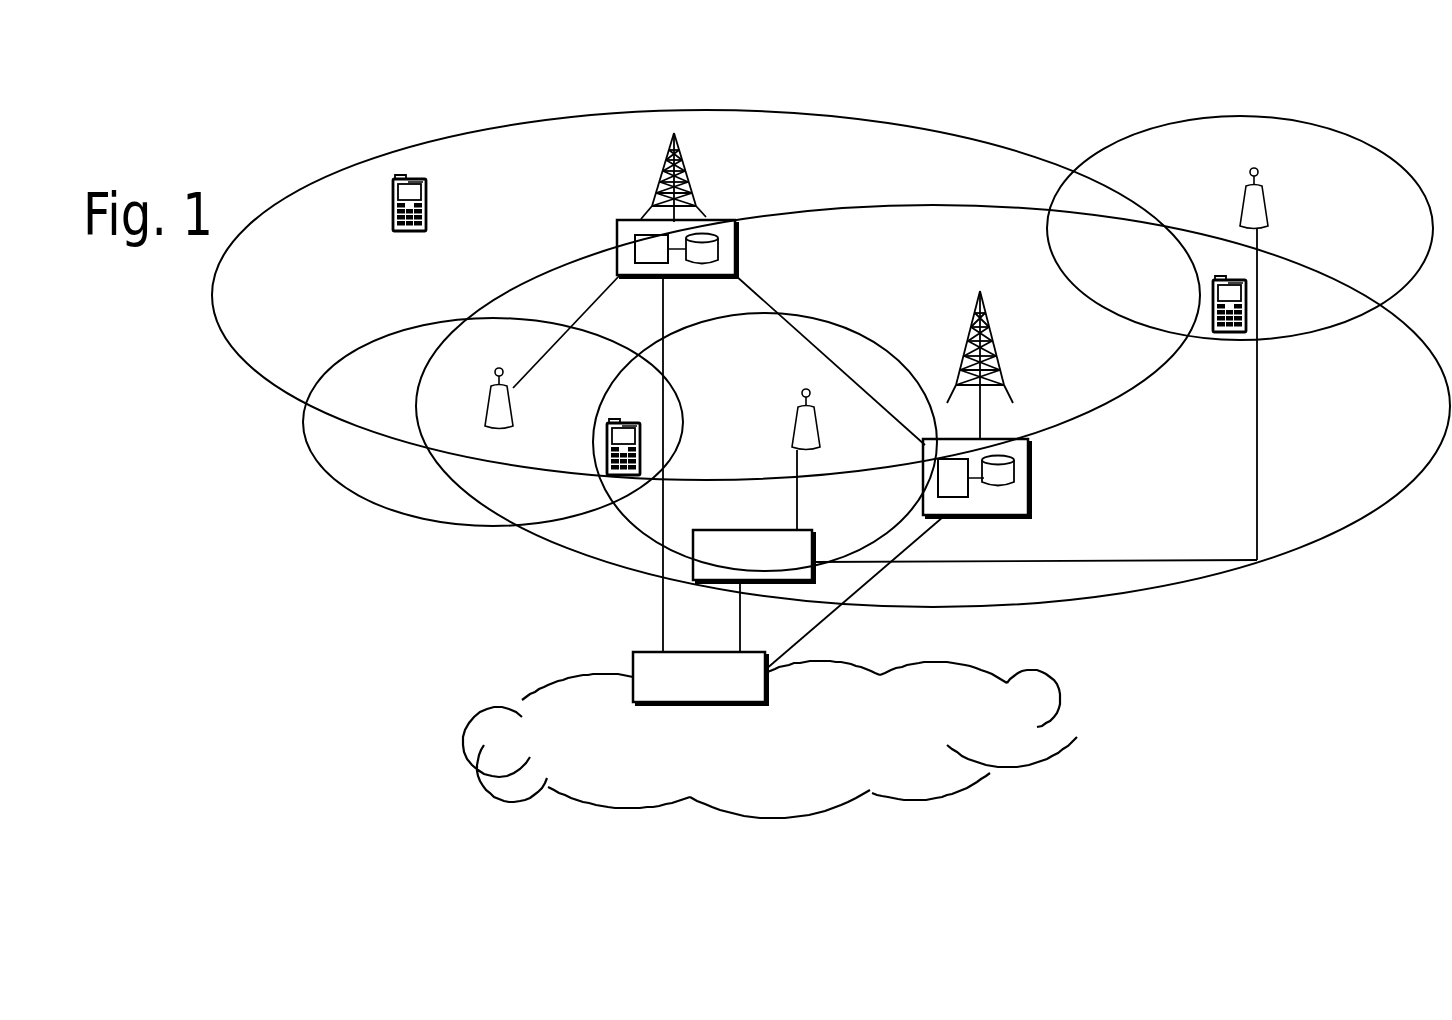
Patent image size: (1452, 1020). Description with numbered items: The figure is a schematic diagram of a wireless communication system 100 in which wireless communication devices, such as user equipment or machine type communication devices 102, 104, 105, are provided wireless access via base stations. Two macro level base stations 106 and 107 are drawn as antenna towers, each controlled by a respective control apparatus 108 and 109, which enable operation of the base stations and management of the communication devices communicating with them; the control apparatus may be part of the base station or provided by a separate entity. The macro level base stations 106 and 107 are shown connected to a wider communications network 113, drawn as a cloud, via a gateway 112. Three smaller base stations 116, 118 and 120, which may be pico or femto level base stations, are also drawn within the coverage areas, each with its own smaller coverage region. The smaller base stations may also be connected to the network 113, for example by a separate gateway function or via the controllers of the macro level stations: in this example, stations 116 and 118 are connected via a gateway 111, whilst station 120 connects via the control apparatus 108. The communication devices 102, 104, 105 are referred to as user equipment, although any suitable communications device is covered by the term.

The wireless communication system 100 is at (316, 165).
The wireless communication device 102 is at (393, 225).
The wireless communication device 104 is at (607, 447).
The wireless communication device 105 is at (1230, 334).
The macro level base station 106 is at (657, 185).
The macro level base station 107 is at (1003, 365).
The control apparatus 108 is at (617, 232).
The control apparatus 109 is at (1018, 503).
The gateway 111 is at (693, 568).
The gateway 112 is at (637, 654).
The wider communications network 113 is at (550, 712).
The smaller base station 116 is at (1241, 198).
The smaller base station 118 is at (800, 445).
The smaller base station 120 is at (484, 402).